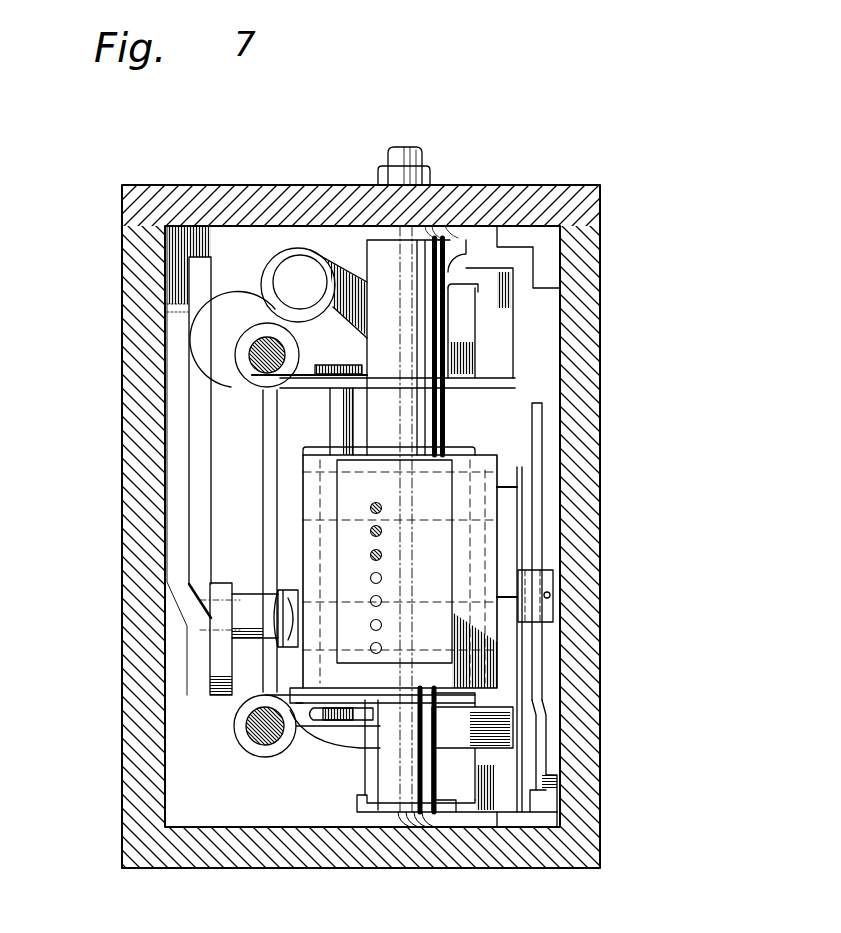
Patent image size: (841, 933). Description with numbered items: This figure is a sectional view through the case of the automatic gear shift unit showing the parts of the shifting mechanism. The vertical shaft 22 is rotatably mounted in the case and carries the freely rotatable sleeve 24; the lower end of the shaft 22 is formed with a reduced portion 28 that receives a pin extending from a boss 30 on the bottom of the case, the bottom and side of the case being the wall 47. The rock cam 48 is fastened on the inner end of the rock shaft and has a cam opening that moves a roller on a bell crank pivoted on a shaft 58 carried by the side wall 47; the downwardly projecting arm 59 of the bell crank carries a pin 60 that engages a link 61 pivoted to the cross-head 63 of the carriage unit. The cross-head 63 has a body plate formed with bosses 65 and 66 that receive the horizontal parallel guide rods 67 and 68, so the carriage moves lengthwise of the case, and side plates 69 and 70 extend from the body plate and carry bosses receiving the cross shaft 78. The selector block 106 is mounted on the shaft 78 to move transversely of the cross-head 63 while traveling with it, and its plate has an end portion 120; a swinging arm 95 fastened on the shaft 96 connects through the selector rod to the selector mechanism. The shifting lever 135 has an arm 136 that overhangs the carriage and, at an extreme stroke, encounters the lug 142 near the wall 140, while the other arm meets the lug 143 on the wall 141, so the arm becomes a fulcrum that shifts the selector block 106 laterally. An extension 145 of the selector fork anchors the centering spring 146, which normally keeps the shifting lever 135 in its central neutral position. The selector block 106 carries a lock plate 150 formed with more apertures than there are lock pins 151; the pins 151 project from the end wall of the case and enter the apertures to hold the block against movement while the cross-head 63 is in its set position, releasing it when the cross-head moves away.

The shaft 22 is at (424, 153).
The sleeve 24 is at (432, 177).
The reduced portion 28 is at (432, 770).
The boss 30 is at (400, 820).
The side wall 47 is at (178, 800).
The rock cam 48 is at (188, 444).
The shaft 58 is at (170, 350).
The downwardly projecting arm 59 is at (168, 520).
The pin 60 is at (196, 664).
The link 61 is at (222, 700).
The cross-head 63 is at (262, 518).
The boss 65 is at (266, 757).
The boss 66 is at (290, 348).
The guide rod 67 is at (264, 340).
The guide rod 68 is at (262, 728).
The side plate 69 is at (280, 392).
The side plate 70 is at (318, 750).
The cross shaft 78 is at (333, 406).
The swinging arm 95 is at (274, 272).
The shaft 96 is at (306, 274).
The selector block 106 is at (470, 455).
The end portion 120 is at (494, 556).
The shifting lever 135 is at (541, 440).
The arm 136 is at (536, 738).
The wall 140 is at (268, 868).
The wall 141 is at (578, 192).
The lug 142 is at (545, 793).
The lug 143 is at (545, 262).
The extension 145 is at (523, 478).
The centering spring 146 is at (554, 598).
The lock plate 150 is at (443, 532).
The lock pins 151 is at (382, 533).